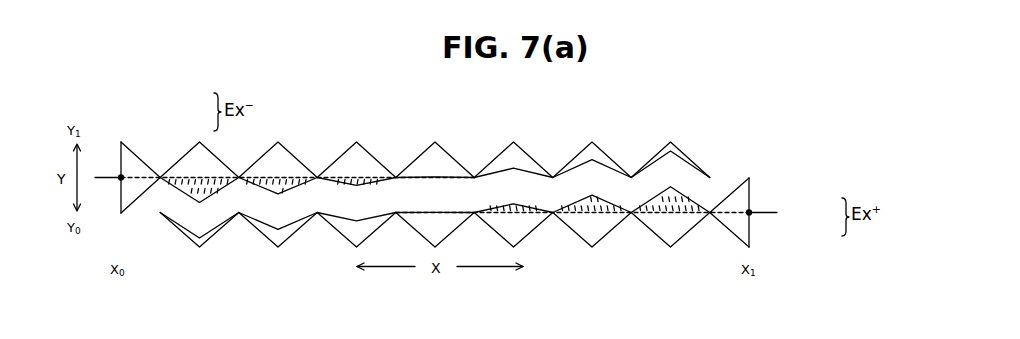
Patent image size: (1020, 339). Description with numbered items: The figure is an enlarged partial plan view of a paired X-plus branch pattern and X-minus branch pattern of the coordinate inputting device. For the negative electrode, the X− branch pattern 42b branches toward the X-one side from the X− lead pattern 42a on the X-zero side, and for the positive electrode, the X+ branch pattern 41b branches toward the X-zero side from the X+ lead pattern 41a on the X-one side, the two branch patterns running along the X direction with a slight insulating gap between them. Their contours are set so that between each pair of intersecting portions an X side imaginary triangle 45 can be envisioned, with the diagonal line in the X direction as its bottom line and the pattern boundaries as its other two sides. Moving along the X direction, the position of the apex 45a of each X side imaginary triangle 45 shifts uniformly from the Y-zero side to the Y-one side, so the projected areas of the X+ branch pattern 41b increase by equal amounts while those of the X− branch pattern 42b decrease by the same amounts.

The X− lead pattern 42a is at (101, 177).
The X− branch pattern 42b is at (135, 175).
The X+ lead pattern 41a is at (752, 212).
The X+ branch pattern 41b is at (670, 232).
The X side imaginary triangle 45 is at (283, 177).
The apex 45a is at (282, 194).